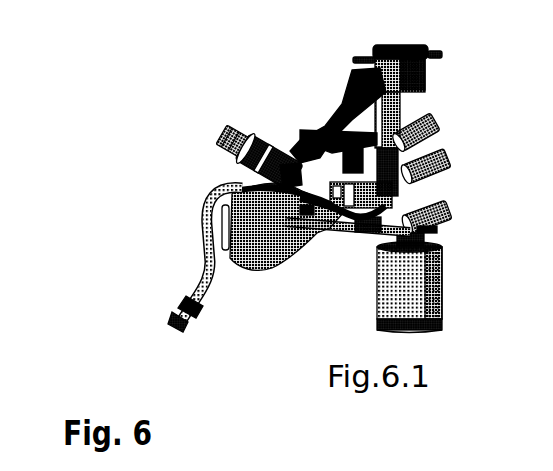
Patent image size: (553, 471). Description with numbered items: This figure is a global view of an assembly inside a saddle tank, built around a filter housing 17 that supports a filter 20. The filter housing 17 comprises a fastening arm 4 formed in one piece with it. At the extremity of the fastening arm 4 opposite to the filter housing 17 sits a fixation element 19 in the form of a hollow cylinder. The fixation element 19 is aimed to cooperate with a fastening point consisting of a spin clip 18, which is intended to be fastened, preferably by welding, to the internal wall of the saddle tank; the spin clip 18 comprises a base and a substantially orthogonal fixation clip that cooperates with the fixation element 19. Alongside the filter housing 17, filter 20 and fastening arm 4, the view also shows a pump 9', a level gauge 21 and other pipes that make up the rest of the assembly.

The fixation element 19 is at (303, 143).
The level gauge 21 is at (448, 142).
The spin clip 18 is at (393, 190).
The fastening arm 4 is at (308, 210).
The pump 9' is at (458, 287).
The filter housing 17 is at (273, 268).
The filter 20 is at (247, 203).